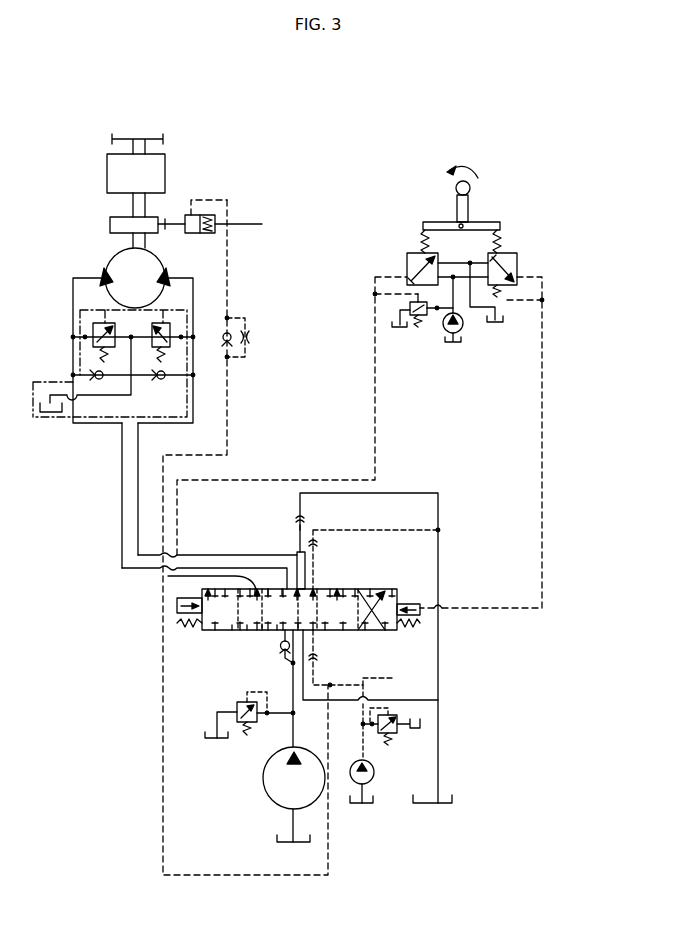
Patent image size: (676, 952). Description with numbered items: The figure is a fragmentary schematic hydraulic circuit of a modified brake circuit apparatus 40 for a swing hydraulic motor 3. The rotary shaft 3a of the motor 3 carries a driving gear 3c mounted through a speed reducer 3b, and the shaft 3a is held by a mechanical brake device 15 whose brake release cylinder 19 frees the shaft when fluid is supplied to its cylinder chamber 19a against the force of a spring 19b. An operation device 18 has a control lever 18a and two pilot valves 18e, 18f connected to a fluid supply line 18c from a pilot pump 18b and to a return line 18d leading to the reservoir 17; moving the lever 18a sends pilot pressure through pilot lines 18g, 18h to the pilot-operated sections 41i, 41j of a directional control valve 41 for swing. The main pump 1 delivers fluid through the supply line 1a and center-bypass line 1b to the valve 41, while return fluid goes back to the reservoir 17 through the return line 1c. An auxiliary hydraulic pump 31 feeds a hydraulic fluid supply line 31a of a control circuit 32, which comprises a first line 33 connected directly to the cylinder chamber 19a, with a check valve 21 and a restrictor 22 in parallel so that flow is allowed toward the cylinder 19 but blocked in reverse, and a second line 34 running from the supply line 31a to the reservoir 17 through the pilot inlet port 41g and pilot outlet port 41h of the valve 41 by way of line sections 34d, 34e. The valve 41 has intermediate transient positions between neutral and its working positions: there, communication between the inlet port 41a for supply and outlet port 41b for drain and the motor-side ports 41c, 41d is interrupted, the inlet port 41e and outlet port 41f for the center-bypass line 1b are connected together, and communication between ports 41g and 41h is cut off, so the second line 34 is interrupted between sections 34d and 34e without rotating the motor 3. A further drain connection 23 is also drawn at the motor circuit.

The main pump 1 is at (263, 793).
The supply line 1a is at (293, 737).
The center-bypass line 1b is at (299, 507).
The return line 1c is at (438, 700).
The swing hydraulic motor 3 is at (106, 266).
The rotary shaft 3a is at (133, 210).
The speed reducer 3b is at (107, 170).
The driving gear 3c is at (150, 138).
The mechanical brake device 15 is at (165, 212).
The reservoir 17 is at (500, 327).
The operation device 18 is at (476, 270).
The control lever 18a is at (470, 207).
The pilot pump 18b is at (440, 315).
The fluid supply line 18c is at (456, 302).
The return line 18d is at (478, 296).
The pilot valve 18e is at (408, 255).
The pilot valve 18f is at (518, 259).
The pilot line 18g is at (377, 386).
The pilot line 18h is at (545, 397).
The brake release cylinder 19 is at (207, 234).
The cylinder chamber 19a is at (192, 213).
The spring 19b is at (254, 224).
The check valve 21 is at (222, 347).
The restrictor 22 is at (251, 337).
The make-up / drain port 23 is at (60, 381).
The auxiliary hydraulic pump 31 is at (375, 770).
The hydraulic fluid supply line 31a is at (365, 680).
The control circuit 32 is at (327, 672).
The first line 33 is at (229, 285).
The second line 34 is at (326, 690).
The line section 34d is at (316, 643).
The line section 34e is at (315, 565).
The brake circuit apparatus 40 is at (138, 638).
The directional control valve 41 is at (395, 589).
The inlet port 41a is at (232, 631).
The outlet port 41b is at (262, 631).
The outlet port 41c is at (170, 577).
The inlet port 41d is at (268, 589).
The inlet port 41e is at (247, 631).
The outlet port 41f is at (255, 589).
The pilot inlet port 41g is at (277, 631).
The pilot outlet port 41h is at (282, 589).
The pilot-operated section 41i is at (177, 601).
The pilot-operated section 41j is at (420, 605).